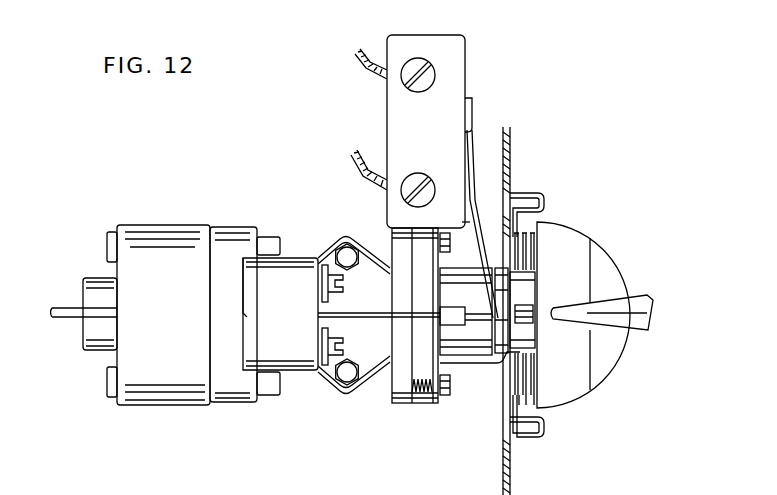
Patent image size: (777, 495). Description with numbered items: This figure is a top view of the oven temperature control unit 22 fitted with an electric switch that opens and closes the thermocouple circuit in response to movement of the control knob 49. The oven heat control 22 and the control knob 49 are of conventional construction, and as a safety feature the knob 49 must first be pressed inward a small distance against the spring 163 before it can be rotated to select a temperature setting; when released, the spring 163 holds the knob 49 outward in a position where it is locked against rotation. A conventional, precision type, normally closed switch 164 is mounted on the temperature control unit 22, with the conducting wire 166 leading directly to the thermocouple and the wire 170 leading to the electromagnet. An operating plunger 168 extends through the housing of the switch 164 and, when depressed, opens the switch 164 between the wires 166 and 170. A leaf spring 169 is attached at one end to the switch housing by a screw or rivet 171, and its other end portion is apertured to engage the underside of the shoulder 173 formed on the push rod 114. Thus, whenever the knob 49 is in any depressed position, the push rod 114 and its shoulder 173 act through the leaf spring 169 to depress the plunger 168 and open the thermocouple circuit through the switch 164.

The oven heat control 22 is at (168, 279).
The push rod 114 is at (383, 315).
The normally closed switch 164 is at (426, 131).
The conducting wire 166 is at (370, 73).
The wire 170 is at (363, 177).
The screw or rivet 171 is at (473, 118).
The leaf spring 169 is at (475, 183).
The operating plunger 168 is at (469, 222).
The shoulder 173 is at (505, 330).
The spring 163 is at (523, 400).
The control knob 49 is at (603, 283).